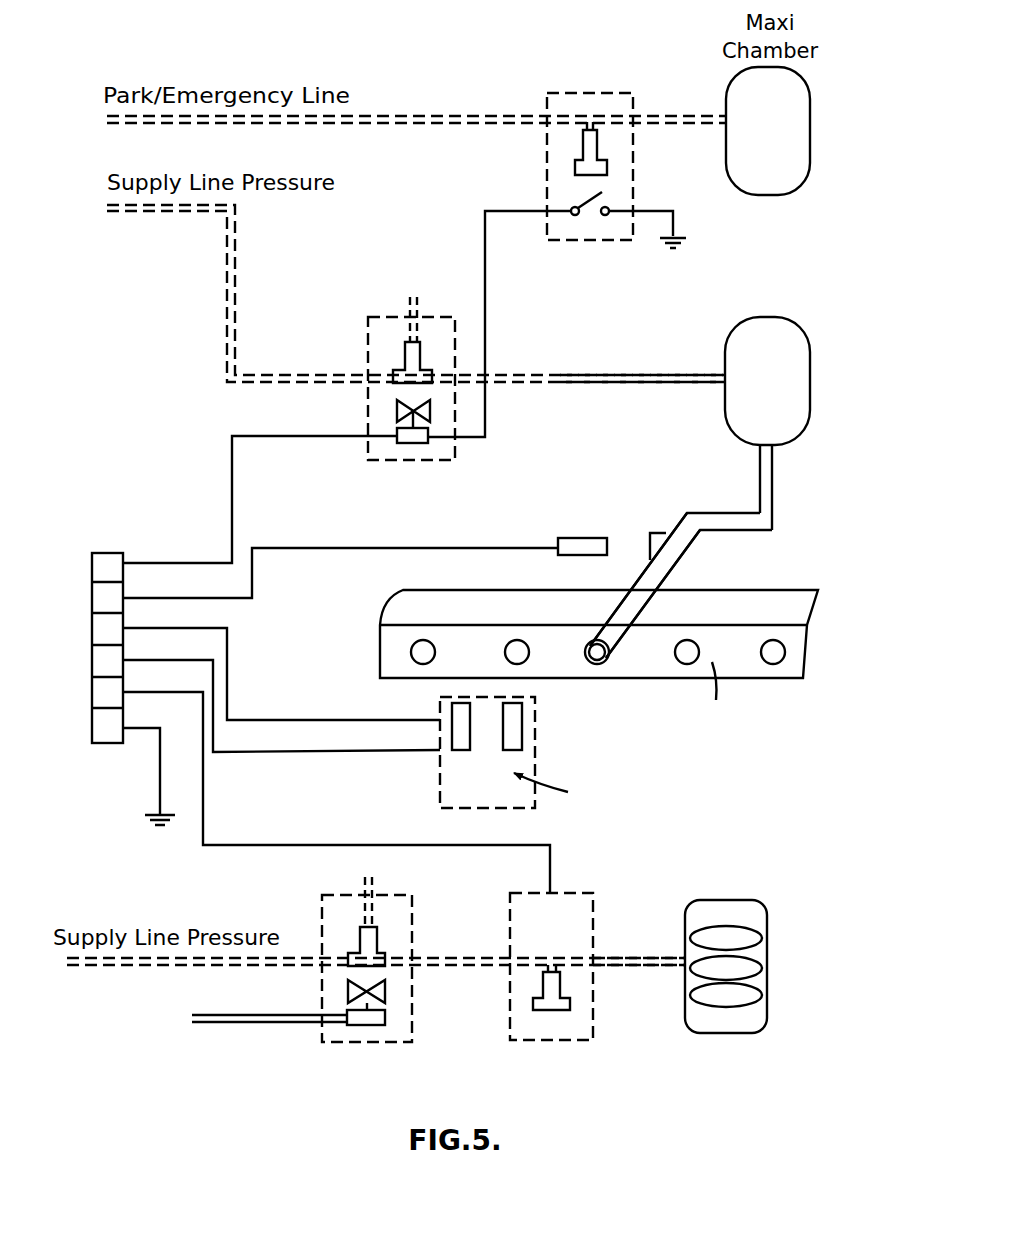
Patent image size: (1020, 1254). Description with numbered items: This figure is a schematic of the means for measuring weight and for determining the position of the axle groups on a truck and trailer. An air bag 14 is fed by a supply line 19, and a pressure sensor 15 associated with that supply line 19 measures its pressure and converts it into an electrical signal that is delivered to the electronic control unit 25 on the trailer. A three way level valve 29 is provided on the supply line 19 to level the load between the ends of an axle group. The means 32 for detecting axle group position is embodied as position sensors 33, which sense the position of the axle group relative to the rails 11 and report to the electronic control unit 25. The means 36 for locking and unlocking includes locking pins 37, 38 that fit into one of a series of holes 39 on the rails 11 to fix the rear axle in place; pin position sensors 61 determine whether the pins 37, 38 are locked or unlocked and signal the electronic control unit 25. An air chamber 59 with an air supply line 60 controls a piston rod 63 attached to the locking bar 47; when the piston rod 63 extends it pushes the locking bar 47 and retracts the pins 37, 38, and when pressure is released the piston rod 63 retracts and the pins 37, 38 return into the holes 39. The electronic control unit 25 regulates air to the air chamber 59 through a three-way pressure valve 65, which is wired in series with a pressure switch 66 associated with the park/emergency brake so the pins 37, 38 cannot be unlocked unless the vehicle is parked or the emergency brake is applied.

The rails 11 is at (790, 598).
The air bag 14 is at (767, 908).
The pressure sensor 15 is at (590, 1018).
The supply line 19 is at (642, 955).
The electronic control unit (ECU) 25 is at (301, 704).
The three way level valve 29 is at (412, 1020).
The means to detect the position of the trailer axle groups 32 is at (370, 788).
The position sensors 33 is at (442, 762).
The means to lock and unlock the locking pins 36 is at (778, 508).
The locking pin 37 is at (600, 665).
The locking pin 38 is at (613, 683).
The holes 39 is at (775, 662).
The locking bar 47 is at (686, 556).
The air chamber 59 is at (725, 358).
The air supply line 60 is at (594, 374).
The pin position sensors 61 is at (573, 556).
The piston rod 63 is at (773, 472).
The 3-way pressure valve 65 is at (396, 432).
The pressure switch 66 is at (572, 205).